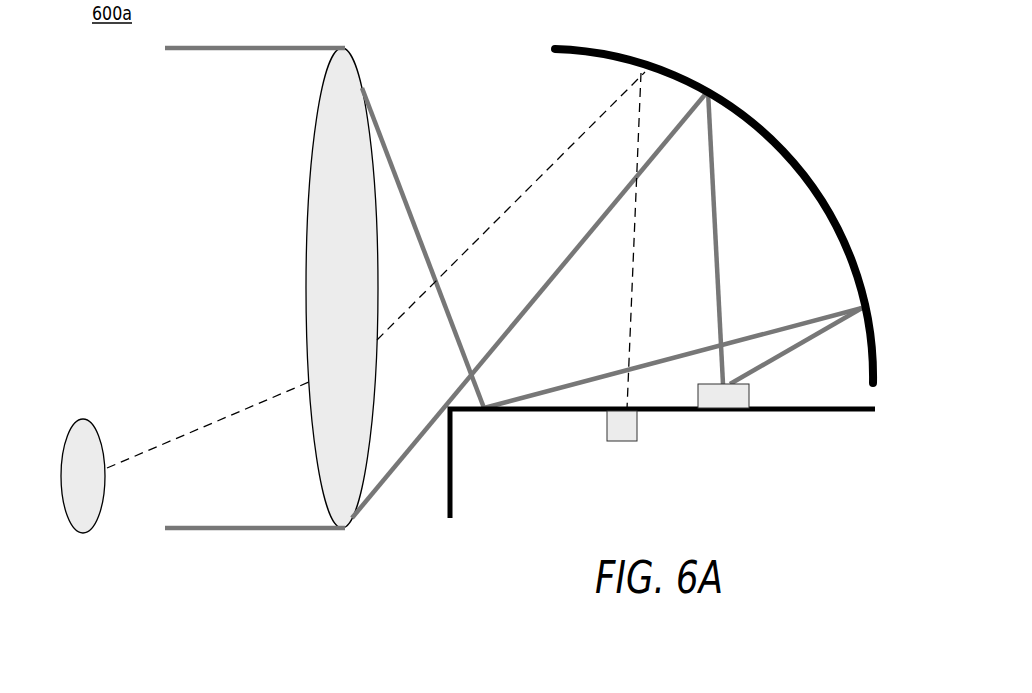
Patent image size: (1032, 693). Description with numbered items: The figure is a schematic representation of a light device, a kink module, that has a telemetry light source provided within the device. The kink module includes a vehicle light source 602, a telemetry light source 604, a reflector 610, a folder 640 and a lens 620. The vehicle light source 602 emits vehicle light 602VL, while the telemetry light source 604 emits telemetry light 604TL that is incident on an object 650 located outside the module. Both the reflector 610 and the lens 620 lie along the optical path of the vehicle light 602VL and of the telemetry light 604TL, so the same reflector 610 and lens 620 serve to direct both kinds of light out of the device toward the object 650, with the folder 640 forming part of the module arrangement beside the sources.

The vehicle light source 602 is at (723, 399).
The vehicle light 602VL is at (235, 51).
The telemetry light source 604 is at (622, 429).
The telemetry light 604TL is at (203, 424).
The reflector 610 is at (732, 101).
The lens 620 is at (365, 86).
The folder 640 is at (833, 413).
The object 650 is at (80, 535).